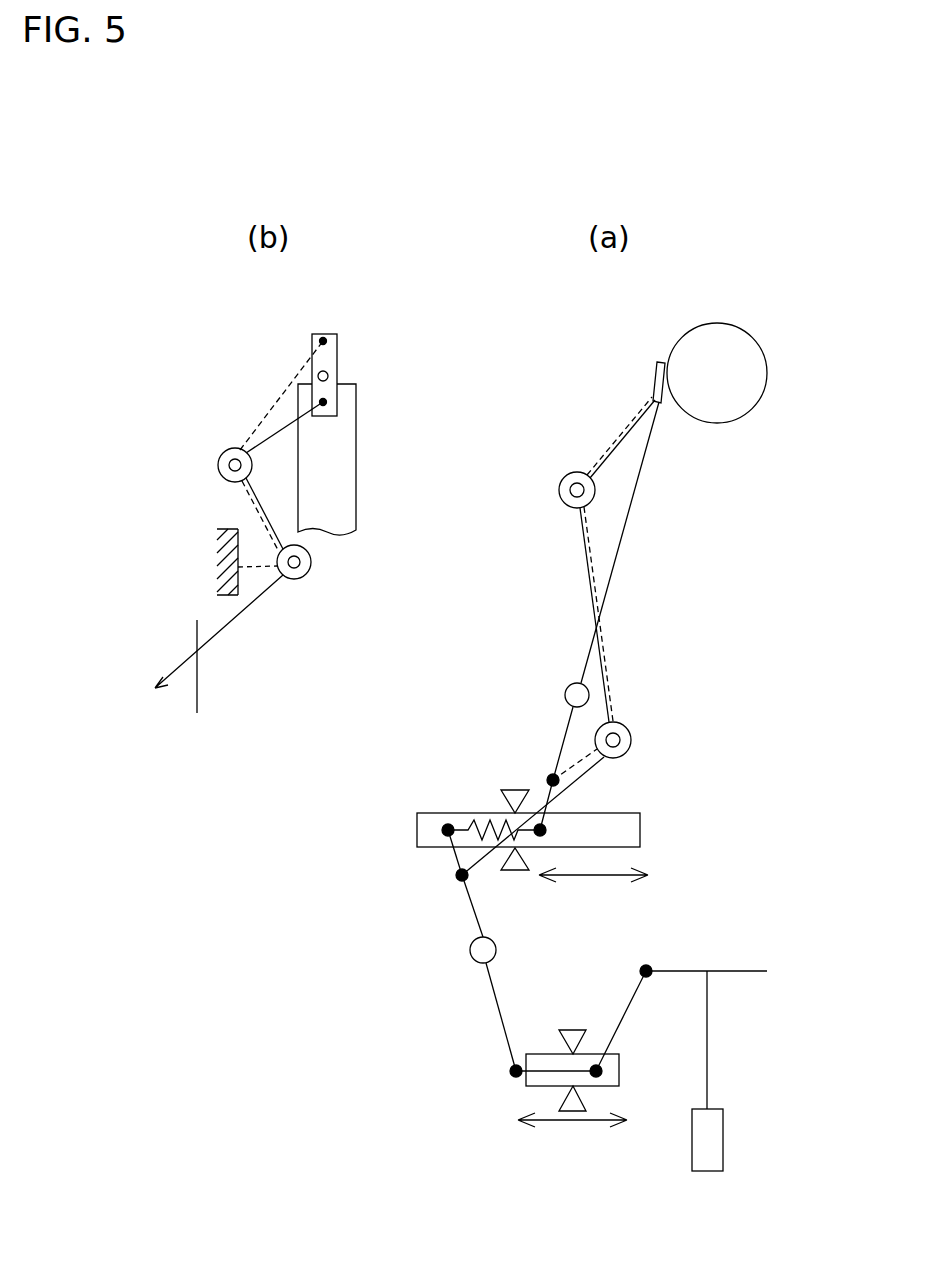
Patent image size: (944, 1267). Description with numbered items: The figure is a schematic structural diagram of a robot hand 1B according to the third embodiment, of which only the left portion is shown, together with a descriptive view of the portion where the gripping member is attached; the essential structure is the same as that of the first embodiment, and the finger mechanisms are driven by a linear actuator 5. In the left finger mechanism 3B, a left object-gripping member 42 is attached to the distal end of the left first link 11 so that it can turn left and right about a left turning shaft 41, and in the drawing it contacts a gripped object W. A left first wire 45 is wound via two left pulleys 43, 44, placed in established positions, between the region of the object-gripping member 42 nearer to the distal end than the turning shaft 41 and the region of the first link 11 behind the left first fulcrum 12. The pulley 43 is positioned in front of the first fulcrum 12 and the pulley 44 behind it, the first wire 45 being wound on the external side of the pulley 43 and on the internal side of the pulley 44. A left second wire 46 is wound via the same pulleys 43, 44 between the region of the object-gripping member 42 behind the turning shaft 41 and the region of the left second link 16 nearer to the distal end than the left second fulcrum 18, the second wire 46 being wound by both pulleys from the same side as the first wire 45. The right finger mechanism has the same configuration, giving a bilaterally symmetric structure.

The left object-gripping member 42 is at (337, 347).
The left turning shaft 41 is at (330, 376).
The left second wire 46 is at (277, 434).
The left first wire 45 is at (268, 408).
The left first link 11 is at (357, 476).
The left pulley 43 is at (218, 463).
The left pulley 44 is at (304, 578).
The left first fulcrum 12 is at (565, 697).
The left second fulcrum 18 is at (470, 955).
The left second link 16 is at (497, 1008).
The linear actuator 5 is at (723, 1137).
The workpiece W is at (716, 322).
The left finger mechanism 3B is at (796, 350).
The robot hand 1B is at (812, 374).